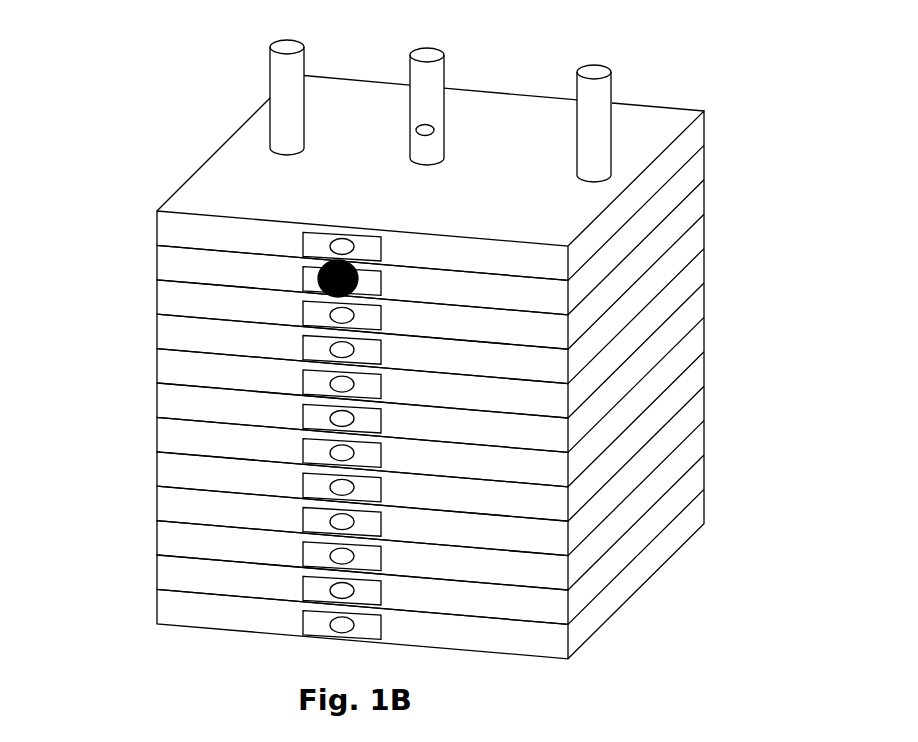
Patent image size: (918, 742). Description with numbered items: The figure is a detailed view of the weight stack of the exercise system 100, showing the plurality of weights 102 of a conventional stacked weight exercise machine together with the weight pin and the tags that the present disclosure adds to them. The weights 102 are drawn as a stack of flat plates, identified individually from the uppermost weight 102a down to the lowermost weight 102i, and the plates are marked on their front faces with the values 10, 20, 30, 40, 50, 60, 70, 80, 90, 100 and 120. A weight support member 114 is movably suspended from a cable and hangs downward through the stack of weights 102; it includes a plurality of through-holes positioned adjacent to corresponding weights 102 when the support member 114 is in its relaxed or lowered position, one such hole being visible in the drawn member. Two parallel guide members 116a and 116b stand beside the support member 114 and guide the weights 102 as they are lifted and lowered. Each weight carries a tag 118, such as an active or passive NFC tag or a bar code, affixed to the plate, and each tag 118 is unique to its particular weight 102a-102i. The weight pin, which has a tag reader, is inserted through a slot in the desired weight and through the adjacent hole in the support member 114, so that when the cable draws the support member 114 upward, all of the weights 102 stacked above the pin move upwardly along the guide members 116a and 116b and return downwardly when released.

The weights 102 is at (806, 302).
The weight 102a is at (704, 117).
The weight 102i is at (704, 512).
The weight support member 114 is at (444, 70).
The guide member 116a is at (305, 57).
The guide member 116b is at (612, 80).
The tags 118 is at (302, 243).
The layer 10 is at (362, 245).
The layer 20 is at (362, 279).
The layer 30 is at (362, 314).
The layer 40 is at (362, 348).
The layer 50 is at (362, 383).
The layer 60 is at (362, 417).
The layer 70 is at (362, 451).
The layer 80 is at (362, 486).
The layer 90 is at (362, 520).
The exercise system 100 is at (362, 555).
The layer 120 is at (362, 623).